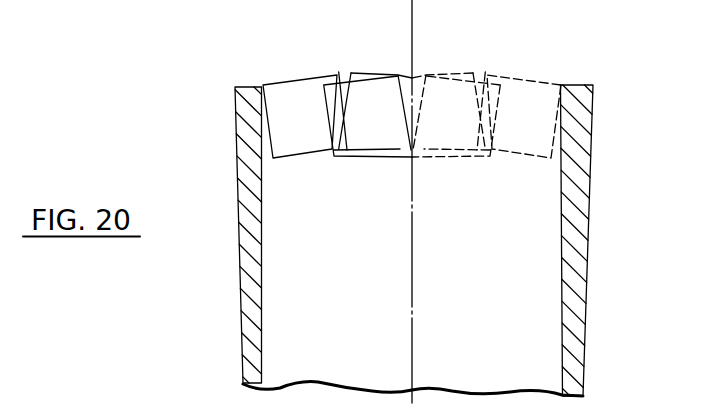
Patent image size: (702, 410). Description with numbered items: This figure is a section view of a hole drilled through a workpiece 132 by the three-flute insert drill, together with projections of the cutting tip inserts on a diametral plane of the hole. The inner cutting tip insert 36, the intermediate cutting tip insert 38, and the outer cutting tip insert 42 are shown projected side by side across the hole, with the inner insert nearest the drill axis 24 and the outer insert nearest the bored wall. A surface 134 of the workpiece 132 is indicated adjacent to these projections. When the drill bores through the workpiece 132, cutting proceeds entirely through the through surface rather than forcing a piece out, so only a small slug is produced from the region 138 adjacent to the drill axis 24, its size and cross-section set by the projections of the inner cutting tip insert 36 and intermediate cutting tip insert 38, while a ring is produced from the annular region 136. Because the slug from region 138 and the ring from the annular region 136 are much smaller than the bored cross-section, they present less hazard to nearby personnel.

The drill axis 24 is at (412, 27).
The inner cutting tip insert 36 is at (400, 160).
The intermediate cutting tip insert 38 is at (343, 160).
The outer cutting tip insert 42 is at (297, 160).
The workpiece 132 is at (243, 122).
The surface 134 is at (245, 86).
The annular region 136 is at (339, 74).
The region 138 is at (417, 76).